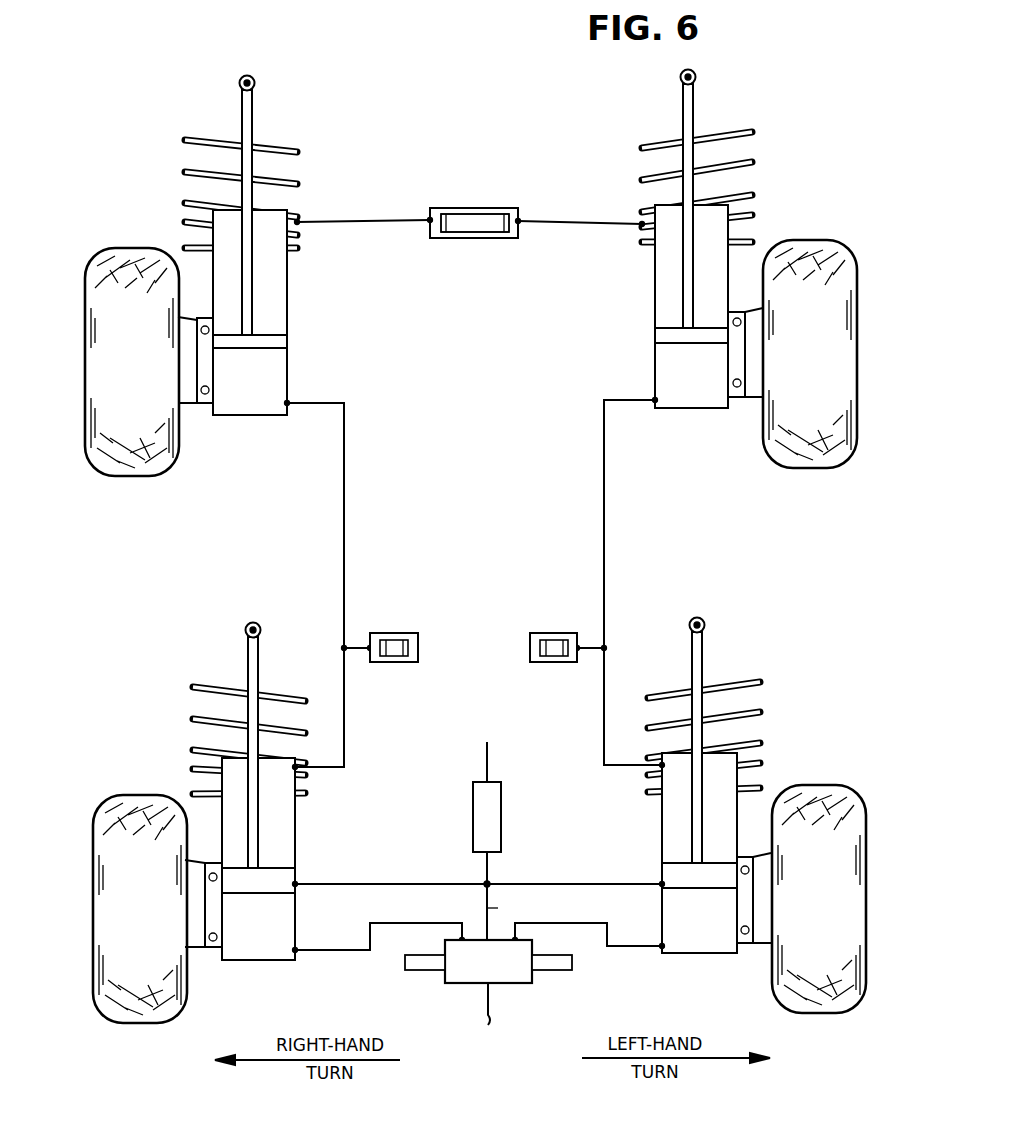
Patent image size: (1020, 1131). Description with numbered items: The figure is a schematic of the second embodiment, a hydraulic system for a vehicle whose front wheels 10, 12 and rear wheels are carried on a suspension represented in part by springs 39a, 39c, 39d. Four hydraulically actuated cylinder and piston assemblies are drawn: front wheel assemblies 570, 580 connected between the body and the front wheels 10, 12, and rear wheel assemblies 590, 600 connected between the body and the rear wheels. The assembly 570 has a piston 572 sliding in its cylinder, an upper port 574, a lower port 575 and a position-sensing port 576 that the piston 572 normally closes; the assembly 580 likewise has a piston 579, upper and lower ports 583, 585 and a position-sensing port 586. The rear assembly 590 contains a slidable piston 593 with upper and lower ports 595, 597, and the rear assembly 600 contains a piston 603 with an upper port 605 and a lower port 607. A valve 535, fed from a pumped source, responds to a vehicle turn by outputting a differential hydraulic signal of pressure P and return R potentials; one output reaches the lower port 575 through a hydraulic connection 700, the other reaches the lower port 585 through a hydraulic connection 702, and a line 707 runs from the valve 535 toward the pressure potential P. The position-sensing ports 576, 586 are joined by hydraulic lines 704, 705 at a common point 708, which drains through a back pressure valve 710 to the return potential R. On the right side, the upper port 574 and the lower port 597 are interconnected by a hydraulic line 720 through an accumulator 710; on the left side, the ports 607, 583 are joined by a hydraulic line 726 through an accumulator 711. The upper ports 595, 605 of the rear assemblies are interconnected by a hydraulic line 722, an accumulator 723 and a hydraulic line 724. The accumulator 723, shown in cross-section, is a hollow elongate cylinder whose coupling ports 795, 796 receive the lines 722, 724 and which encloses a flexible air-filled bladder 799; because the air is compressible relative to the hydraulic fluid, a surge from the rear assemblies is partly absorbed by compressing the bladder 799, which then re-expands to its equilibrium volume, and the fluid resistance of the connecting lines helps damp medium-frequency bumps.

The front wheel 10 is at (825, 240).
The front wheel 12 is at (112, 248).
The spring 39a is at (298, 698).
The spring 39c is at (298, 148).
The spring 39d is at (742, 134).
The valve 535 is at (462, 983).
The front wheel cylinder and piston assembly 570 is at (296, 830).
The piston 572 is at (256, 895).
The upper port 574 is at (308, 780).
The lower port 575 is at (297, 950).
The position-sensing port 576 is at (297, 884).
The piston 579 is at (700, 890).
The front wheel cylinder and piston assembly 580 is at (662, 838).
The upper port 583 is at (648, 770).
The lower port 585 is at (662, 948).
The position-sensing port 586 is at (662, 886).
The rear wheel cylinder and piston assembly 590 is at (288, 310).
The piston 593 is at (250, 350).
The upper port 595 is at (300, 230).
The lower port 597 is at (292, 401).
The rear wheel cylinder and piston assembly 600 is at (655, 305).
The piston 603 is at (690, 345).
The upper port 605 is at (638, 225).
The lower port 607 is at (655, 403).
The hydraulic connection 700 is at (400, 923).
The hydraulic connection 702 is at (535, 923).
The hydraulic line 704 is at (396, 884).
The hydraulic line 705 is at (614, 884).
The pressure line 707 is at (490, 990).
The common point 708 is at (490, 884).
The back pressure valve 710 is at (395, 633).
The accumulator 711 is at (545, 662).
The hydraulic line 720 is at (344, 562).
The hydraulic line 722 is at (340, 220).
The accumulator 723 is at (468, 208).
The hydraulic line 724 is at (552, 221).
The hydraulic line 726 is at (604, 560).
The hydraulic coupling port 795 is at (428, 216).
The hydraulic coupling port 796 is at (519, 224).
The air-filled bladder 799 is at (493, 238).